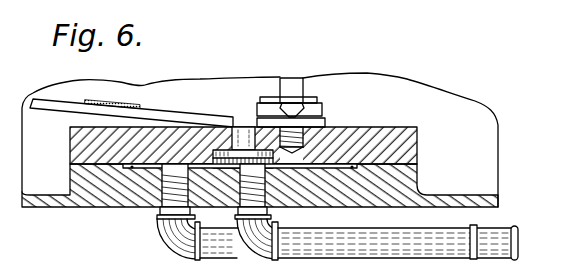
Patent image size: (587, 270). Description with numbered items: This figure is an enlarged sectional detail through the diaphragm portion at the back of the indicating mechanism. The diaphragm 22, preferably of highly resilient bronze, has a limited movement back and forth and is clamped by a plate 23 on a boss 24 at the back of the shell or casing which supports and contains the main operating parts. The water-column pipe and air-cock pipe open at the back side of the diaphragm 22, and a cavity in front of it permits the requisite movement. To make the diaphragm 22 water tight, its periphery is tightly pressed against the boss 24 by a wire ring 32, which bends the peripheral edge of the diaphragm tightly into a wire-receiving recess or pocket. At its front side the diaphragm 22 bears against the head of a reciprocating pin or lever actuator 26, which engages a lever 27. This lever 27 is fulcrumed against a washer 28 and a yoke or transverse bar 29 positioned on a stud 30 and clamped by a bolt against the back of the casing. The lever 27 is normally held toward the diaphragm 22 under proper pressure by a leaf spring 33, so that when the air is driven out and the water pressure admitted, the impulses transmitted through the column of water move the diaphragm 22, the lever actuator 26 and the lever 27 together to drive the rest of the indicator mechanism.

The diaphragm 22 is at (132, 168).
The plate 23 is at (70, 151).
The boss 24 is at (418, 176).
The lever actuator 26 is at (242, 127).
The lever 27 is at (188, 105).
The washer 28 is at (322, 106).
The yoke 29 is at (318, 98).
The stud 30 is at (293, 78).
The wire ring 32 is at (137, 168).
The leaf spring 33 is at (112, 96).